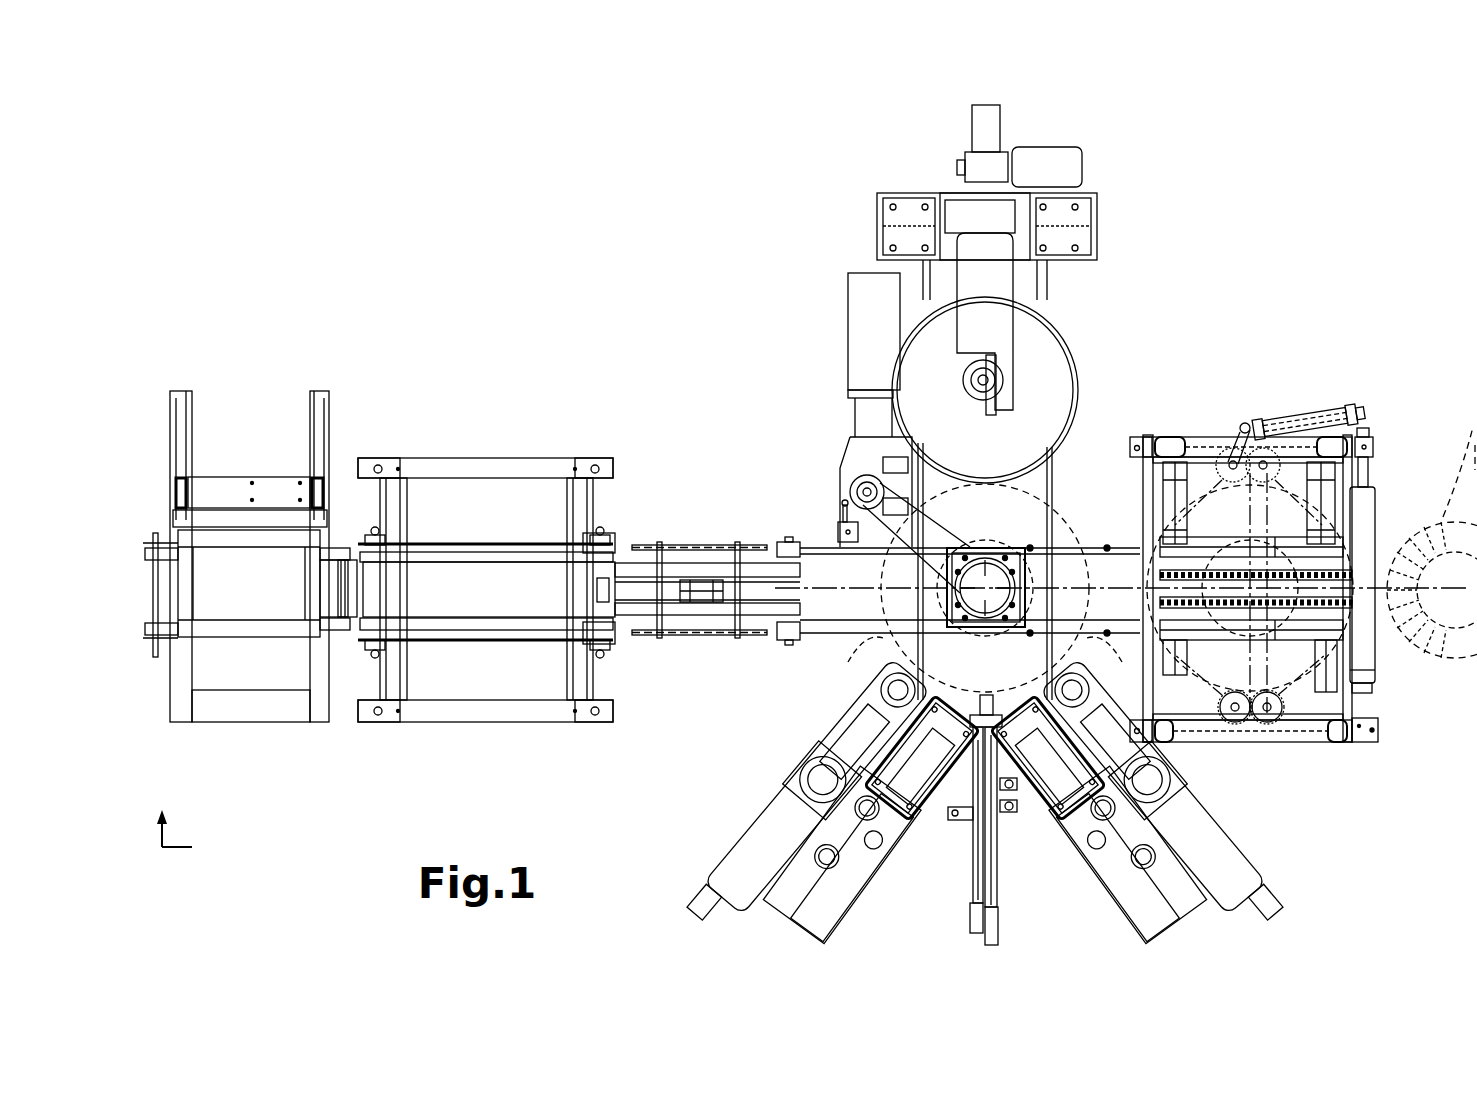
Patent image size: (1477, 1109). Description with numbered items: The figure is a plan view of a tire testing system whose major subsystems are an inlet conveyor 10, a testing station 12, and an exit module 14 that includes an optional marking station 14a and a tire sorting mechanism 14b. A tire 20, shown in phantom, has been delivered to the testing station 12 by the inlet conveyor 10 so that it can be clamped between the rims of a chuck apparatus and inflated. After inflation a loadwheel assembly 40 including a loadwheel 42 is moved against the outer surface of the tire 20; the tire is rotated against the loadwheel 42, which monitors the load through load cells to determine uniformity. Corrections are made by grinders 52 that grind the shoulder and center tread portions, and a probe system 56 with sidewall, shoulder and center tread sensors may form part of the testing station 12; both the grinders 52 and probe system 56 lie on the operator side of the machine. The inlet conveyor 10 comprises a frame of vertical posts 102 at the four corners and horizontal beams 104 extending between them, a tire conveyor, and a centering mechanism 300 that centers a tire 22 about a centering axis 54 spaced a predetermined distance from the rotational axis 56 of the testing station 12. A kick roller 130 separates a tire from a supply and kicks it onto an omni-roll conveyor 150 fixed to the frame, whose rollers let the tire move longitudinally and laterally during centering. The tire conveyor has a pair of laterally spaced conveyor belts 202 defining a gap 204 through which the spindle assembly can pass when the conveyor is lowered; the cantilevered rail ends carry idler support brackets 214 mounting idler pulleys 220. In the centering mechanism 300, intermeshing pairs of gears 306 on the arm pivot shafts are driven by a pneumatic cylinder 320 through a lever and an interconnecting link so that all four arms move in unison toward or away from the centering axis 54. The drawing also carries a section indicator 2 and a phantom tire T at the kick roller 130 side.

The inlet conveyor 10 is at (1250, 232).
The testing station 12 is at (828, 280).
The exit module 14 is at (392, 362).
The marking station 14a is at (501, 453).
The tire sorting mechanism 14b is at (253, 430).
The tire 20 is at (970, 588).
The tire 22 is at (1238, 673).
The loadwheel assembly 40 is at (1084, 314).
The loadwheel 42 is at (1050, 388).
The grinders 52 is at (742, 803).
The centering axis 54 is at (1250, 580).
The probe system 56 is at (1002, 546).
The vertical posts 102 is at (1170, 442).
The horizontal beams 104 is at (1143, 496).
The kick roller 130 is at (1365, 520).
The conveyor 150 is at (1353, 600).
The conveyor belts 202 is at (1117, 620).
The gap 204 is at (848, 578).
The idler support brackets 214 is at (797, 545).
The idler pulleys 220 is at (782, 548).
The centering mechanism 300 is at (1368, 405).
The gears 306 is at (1238, 722).
The pneumatic cylinder 320 is at (1292, 408).
The section line 2 is at (172, 815).
The tire T is at (1432, 537).